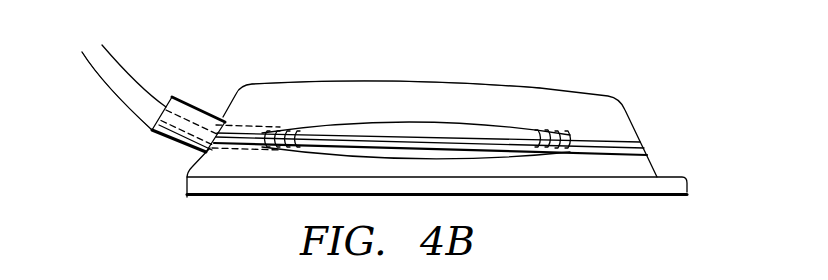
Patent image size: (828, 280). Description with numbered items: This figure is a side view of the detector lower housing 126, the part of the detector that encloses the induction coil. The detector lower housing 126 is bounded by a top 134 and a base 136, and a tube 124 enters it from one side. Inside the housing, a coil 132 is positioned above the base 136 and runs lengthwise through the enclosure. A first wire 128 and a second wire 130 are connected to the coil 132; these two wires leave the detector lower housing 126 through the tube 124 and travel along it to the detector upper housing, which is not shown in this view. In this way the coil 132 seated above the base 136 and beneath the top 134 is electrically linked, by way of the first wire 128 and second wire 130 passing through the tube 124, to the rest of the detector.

The tube 124 is at (197, 100).
The detector lower housing 126 is at (447, 70).
The first wire 128 is at (157, 64).
The second wire 130 is at (108, 86).
The coil 132 is at (315, 127).
The top 134 is at (543, 88).
The base 136 is at (670, 177).